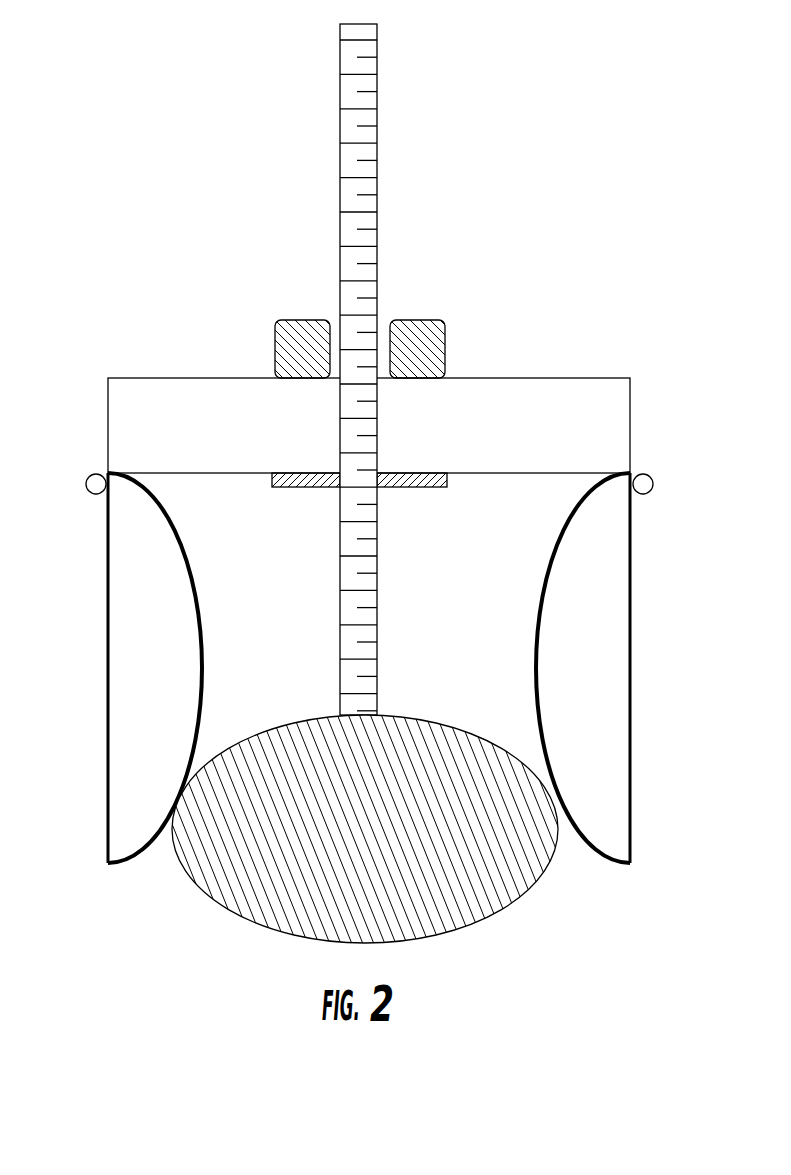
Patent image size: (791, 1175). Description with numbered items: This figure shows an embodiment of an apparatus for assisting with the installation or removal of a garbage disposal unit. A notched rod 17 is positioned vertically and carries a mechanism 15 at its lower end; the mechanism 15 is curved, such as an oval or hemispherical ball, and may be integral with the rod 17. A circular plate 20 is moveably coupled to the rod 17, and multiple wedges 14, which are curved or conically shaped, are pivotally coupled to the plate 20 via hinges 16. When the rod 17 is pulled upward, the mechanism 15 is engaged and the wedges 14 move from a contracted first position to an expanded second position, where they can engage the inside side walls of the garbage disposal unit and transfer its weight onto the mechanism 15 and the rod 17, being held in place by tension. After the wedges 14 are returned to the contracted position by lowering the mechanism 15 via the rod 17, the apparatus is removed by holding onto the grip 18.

The wedges 14 is at (99, 692).
The mechanism 15 is at (271, 714).
The hinges 16 is at (86, 471).
The rod 17 is at (380, 305).
The grip 18 is at (449, 345).
The plate 20 is at (186, 377).